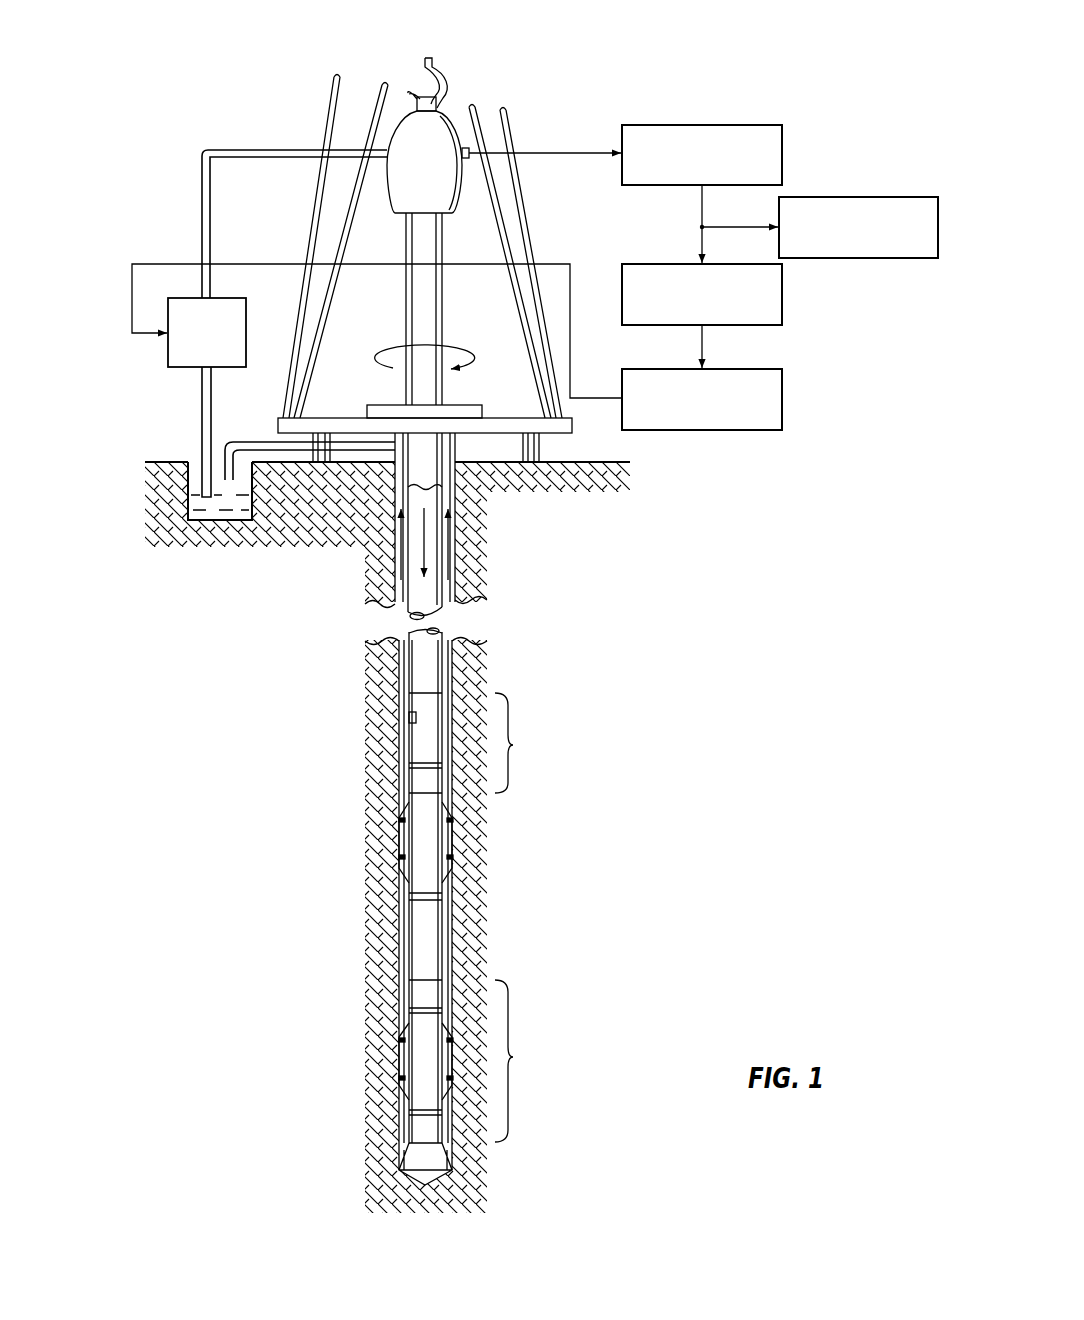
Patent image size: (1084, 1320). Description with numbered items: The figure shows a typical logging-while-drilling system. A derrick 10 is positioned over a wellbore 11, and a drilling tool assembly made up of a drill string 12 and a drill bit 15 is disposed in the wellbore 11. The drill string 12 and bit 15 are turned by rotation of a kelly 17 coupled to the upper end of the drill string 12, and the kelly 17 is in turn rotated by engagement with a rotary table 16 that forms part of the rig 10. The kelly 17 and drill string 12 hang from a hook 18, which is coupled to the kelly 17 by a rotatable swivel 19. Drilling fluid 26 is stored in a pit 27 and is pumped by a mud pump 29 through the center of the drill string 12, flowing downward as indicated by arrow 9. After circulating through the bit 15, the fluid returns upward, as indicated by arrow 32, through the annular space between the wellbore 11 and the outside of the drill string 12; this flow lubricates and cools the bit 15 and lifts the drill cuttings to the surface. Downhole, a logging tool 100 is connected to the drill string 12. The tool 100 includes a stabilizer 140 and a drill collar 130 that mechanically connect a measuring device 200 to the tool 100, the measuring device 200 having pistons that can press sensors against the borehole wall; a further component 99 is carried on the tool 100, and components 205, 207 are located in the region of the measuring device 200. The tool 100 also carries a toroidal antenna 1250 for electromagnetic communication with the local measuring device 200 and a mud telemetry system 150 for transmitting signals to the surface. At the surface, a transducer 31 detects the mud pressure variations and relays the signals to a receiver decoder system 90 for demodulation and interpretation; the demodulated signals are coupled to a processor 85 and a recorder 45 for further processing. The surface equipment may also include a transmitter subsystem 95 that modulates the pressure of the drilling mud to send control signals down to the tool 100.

The arrow 9 is at (424, 538).
The derrick 10 is at (608, 428).
The wellbore 11 is at (455, 600).
The drill string 12 is at (420, 690).
The drill bit 15 is at (418, 1156).
The rotary table 16 is at (462, 408).
The kelly 17 is at (432, 238).
The hook 18 is at (425, 60).
The swivel 19 is at (413, 197).
The drilling fluid 26 is at (224, 522).
The pit 27 is at (185, 503).
The mud pump 29 is at (183, 367).
The transducer 31 is at (469, 160).
The arrow 32 is at (455, 553).
The recorder 45 is at (837, 197).
The processor 85 is at (782, 290).
The receiver decoder system 90 is at (720, 125).
The transmitter subsystem 95 is at (782, 400).
The sensor 99 is at (407, 717).
The logging tool 100 is at (674, 691).
The drill collar 130 is at (418, 928).
The stabilizer 140 is at (415, 836).
The mud telemetry system 150 is at (513, 745).
The measuring device 200 is at (513, 1057).
The sub 205 is at (421, 1008).
The sub 207 is at (421, 1110).
The toroidal antenna 1250 is at (420, 763).